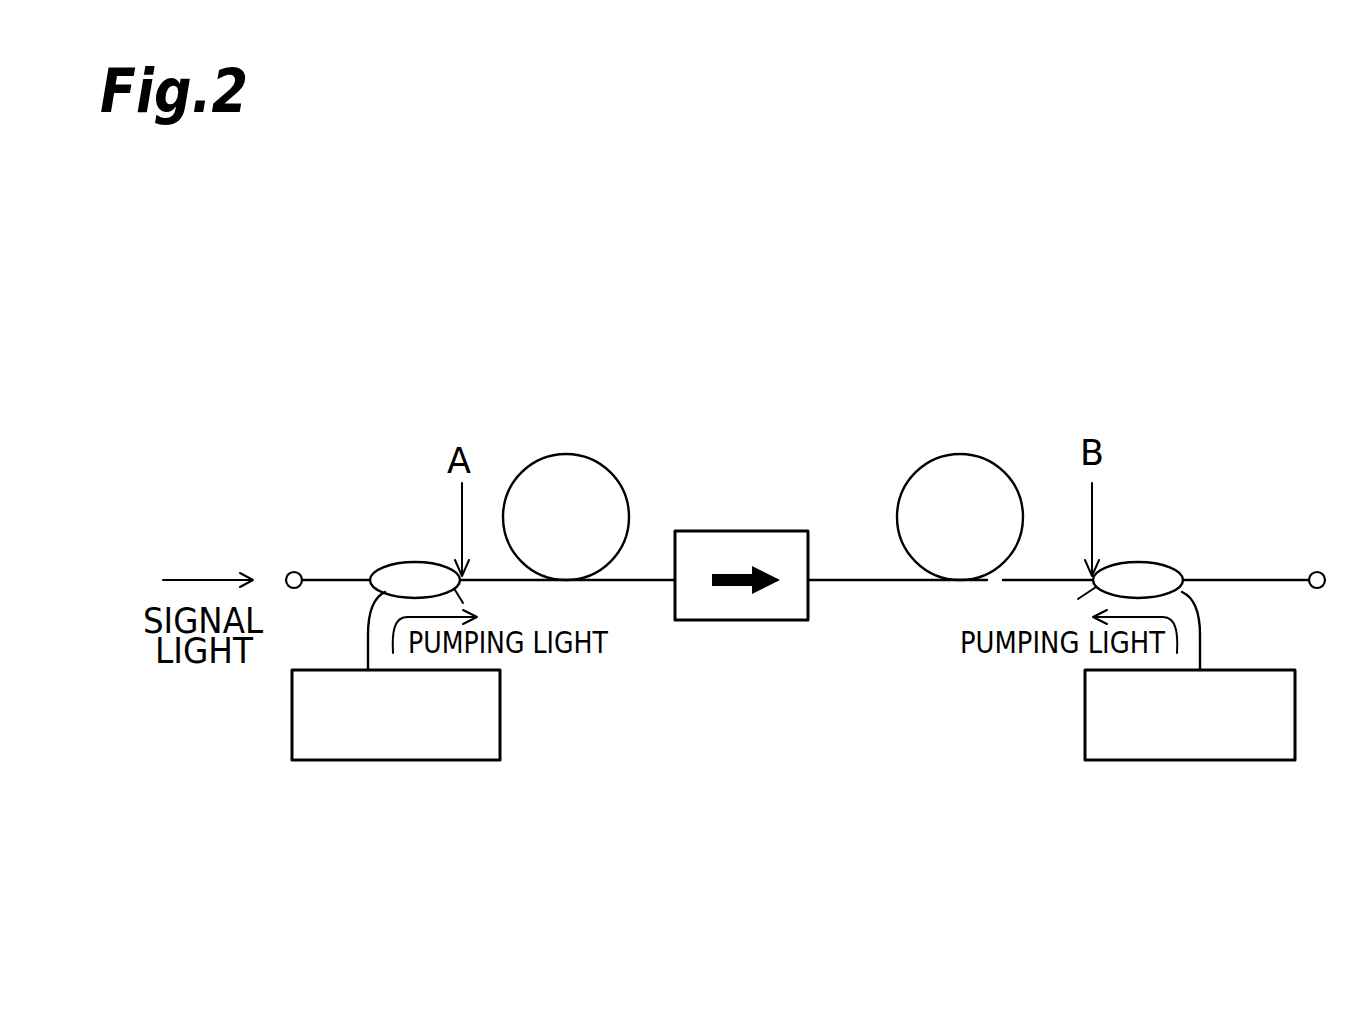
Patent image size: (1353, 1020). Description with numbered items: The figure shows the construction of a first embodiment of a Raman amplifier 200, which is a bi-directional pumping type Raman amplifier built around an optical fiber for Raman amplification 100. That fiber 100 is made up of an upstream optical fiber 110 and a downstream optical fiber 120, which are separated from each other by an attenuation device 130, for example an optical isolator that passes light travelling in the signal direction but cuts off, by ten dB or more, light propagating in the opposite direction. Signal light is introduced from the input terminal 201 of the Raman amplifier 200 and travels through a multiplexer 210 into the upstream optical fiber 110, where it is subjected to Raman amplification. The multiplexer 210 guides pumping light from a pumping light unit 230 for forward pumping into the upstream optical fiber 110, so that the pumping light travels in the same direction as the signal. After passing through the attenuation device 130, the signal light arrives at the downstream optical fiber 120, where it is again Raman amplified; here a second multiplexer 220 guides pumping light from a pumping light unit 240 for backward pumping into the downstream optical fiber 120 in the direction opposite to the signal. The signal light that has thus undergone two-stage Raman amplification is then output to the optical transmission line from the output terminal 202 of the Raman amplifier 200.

The Raman amplifier 200 is at (1049, 212).
The optical fiber for Raman amplification 100 is at (968, 335).
The upstream optical fiber 110 is at (558, 452).
The downstream optical fiber 120 is at (963, 452).
The attenuation device 130 is at (676, 621).
The input terminal 201 is at (295, 572).
The output terminal 202 is at (1317, 571).
The multiplexer 210 is at (407, 557).
The multiplexer 220 is at (1165, 558).
The pumping light unit for forward pumping 230 is at (500, 742).
The pumping light unit for backward pumping 240 is at (1085, 750).